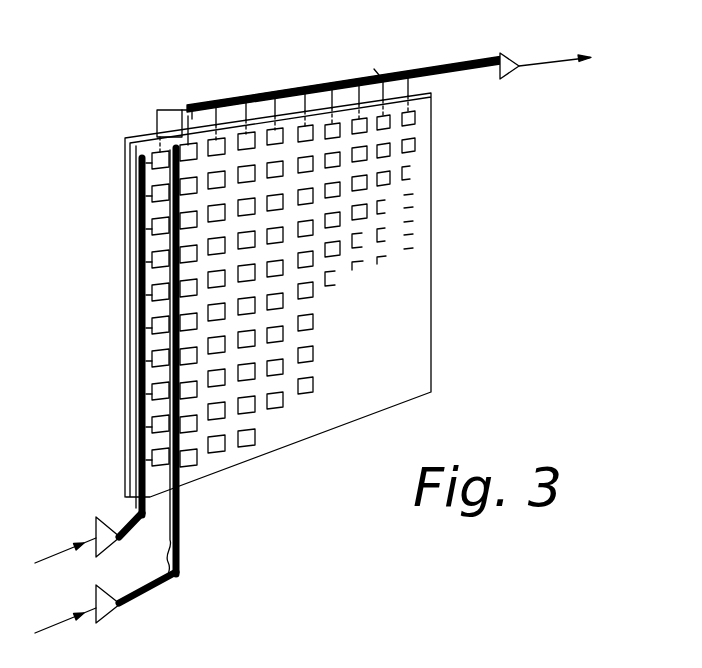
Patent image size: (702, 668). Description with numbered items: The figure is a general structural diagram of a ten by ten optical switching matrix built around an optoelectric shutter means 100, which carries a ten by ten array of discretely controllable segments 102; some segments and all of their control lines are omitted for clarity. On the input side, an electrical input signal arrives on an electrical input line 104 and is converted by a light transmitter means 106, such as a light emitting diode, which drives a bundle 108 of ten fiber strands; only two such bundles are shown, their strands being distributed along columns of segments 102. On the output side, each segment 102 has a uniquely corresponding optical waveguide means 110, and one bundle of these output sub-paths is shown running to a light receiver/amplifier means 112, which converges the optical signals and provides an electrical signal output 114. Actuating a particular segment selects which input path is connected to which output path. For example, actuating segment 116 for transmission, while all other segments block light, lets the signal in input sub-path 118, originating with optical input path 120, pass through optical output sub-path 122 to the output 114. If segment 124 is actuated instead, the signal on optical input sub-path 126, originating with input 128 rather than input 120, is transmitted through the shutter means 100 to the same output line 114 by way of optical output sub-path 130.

The optoelectric shutter means 100 is at (130, 388).
The discretely controllable segments 102 is at (415, 115).
The electrical input line 104 is at (54, 552).
The light transmitter means 106 is at (108, 586).
The bundle of fiber strands 108 is at (127, 526).
The optical waveguide means 110 is at (222, 97).
The light receiver/amplifier means 112 is at (503, 60).
The electrical signal output 114 is at (546, 64).
The segment 116 is at (151, 150).
The input sub-path 118 is at (140, 170).
The optical input path 120 is at (46, 561).
The optical output sub-path 122 is at (157, 120).
The segment 124 is at (198, 147).
The optical input sub-path 126 is at (176, 178).
The input 128 is at (63, 628).
The optical output sub-path 130 is at (185, 110).